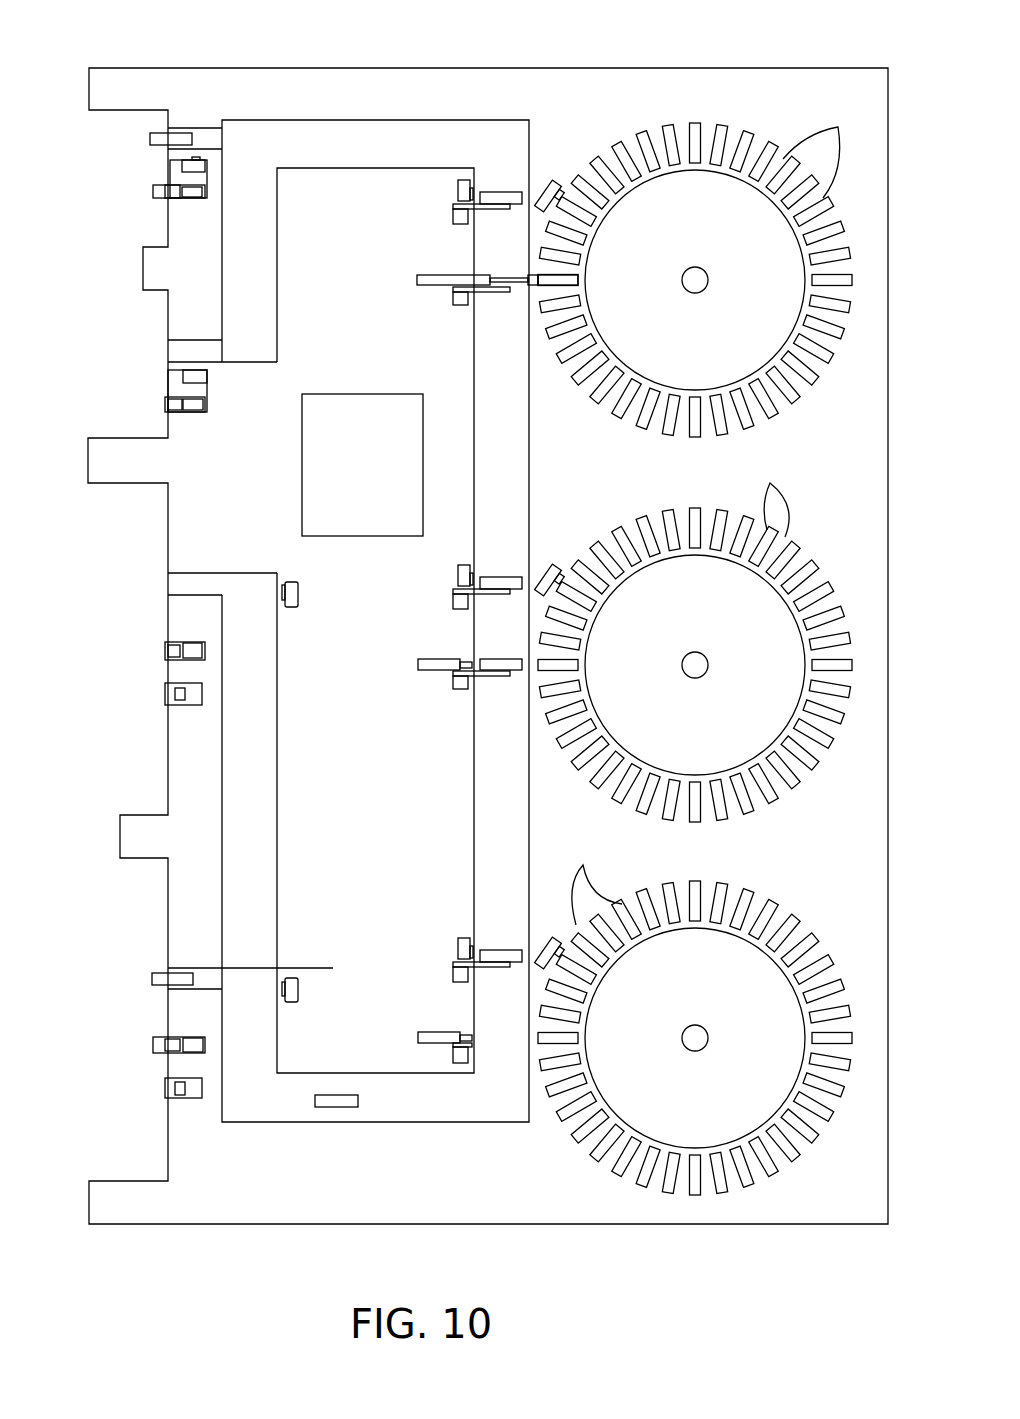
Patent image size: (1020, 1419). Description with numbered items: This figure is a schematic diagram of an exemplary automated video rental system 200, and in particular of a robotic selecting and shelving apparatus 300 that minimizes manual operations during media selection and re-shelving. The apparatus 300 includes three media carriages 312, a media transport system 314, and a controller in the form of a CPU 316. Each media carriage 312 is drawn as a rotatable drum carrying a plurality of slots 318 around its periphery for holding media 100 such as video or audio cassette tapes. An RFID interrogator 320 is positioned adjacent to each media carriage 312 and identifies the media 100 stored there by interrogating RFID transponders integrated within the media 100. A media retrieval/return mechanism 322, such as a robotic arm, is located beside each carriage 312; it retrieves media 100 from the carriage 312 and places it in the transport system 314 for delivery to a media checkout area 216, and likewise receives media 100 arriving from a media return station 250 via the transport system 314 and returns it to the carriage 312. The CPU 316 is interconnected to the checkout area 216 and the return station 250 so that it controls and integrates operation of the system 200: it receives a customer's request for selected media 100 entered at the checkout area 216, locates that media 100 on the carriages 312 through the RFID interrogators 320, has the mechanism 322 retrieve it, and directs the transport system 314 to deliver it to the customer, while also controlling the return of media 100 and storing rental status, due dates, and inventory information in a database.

The media 100 is at (668, 128).
The system 200 is at (688, 50).
The media checkout area 216 is at (155, 697).
The media return station 250 is at (162, 207).
The robotic selecting and shelving apparatus 300 is at (882, 118).
The media carriage 312 is at (721, 352).
The media transport system 314 is at (270, 237).
The CPU 316 is at (340, 527).
The slot 318 is at (836, 130).
The RFID interrogator 320 is at (547, 183).
The media retrieval/return mechanism 322 is at (458, 208).